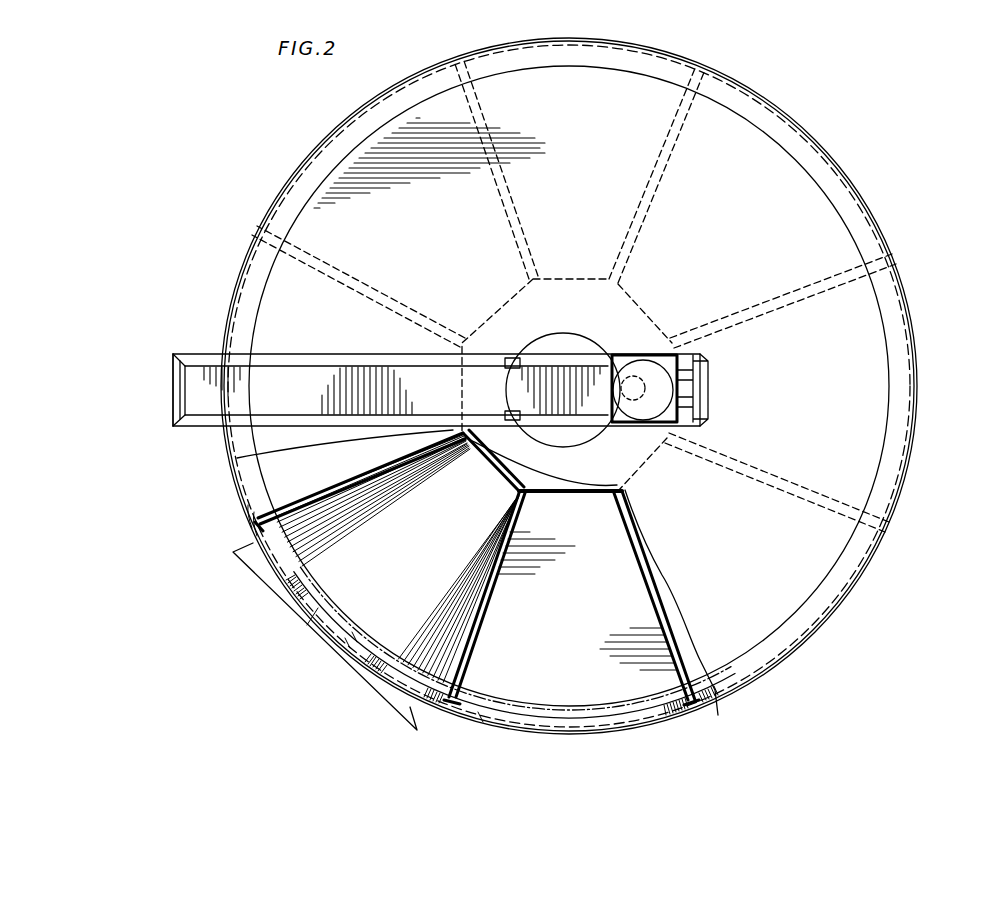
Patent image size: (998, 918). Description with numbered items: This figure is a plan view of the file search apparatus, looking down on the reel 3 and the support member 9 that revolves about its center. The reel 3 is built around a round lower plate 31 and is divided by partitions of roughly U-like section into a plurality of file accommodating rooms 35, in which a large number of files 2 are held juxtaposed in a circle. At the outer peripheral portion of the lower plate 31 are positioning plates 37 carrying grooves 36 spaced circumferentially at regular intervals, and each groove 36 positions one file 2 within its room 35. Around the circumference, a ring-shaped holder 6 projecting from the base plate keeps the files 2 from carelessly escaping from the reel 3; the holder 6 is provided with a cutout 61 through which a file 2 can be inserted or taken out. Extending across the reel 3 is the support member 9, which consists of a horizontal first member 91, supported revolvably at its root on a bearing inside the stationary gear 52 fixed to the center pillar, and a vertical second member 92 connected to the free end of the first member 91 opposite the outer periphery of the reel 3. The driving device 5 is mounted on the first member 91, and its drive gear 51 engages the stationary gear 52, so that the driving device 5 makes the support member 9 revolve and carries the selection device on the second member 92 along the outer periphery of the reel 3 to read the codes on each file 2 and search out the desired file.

The file 2 is at (257, 570).
The reel 3 is at (254, 530).
The driving device 5 is at (655, 415).
The ring-shaped holder 6 is at (246, 508).
The support member 9 is at (320, 354).
The lower plate 31 is at (332, 492).
The file accommodating room 35 is at (265, 470).
The groove 36 is at (380, 662).
The positioning plate 37 is at (352, 652).
The drive gear 51 is at (634, 400).
The stationary gear 52 is at (585, 437).
The cutout 61 is at (307, 625).
The first member 91 is at (372, 354).
The second member 92 is at (173, 389).